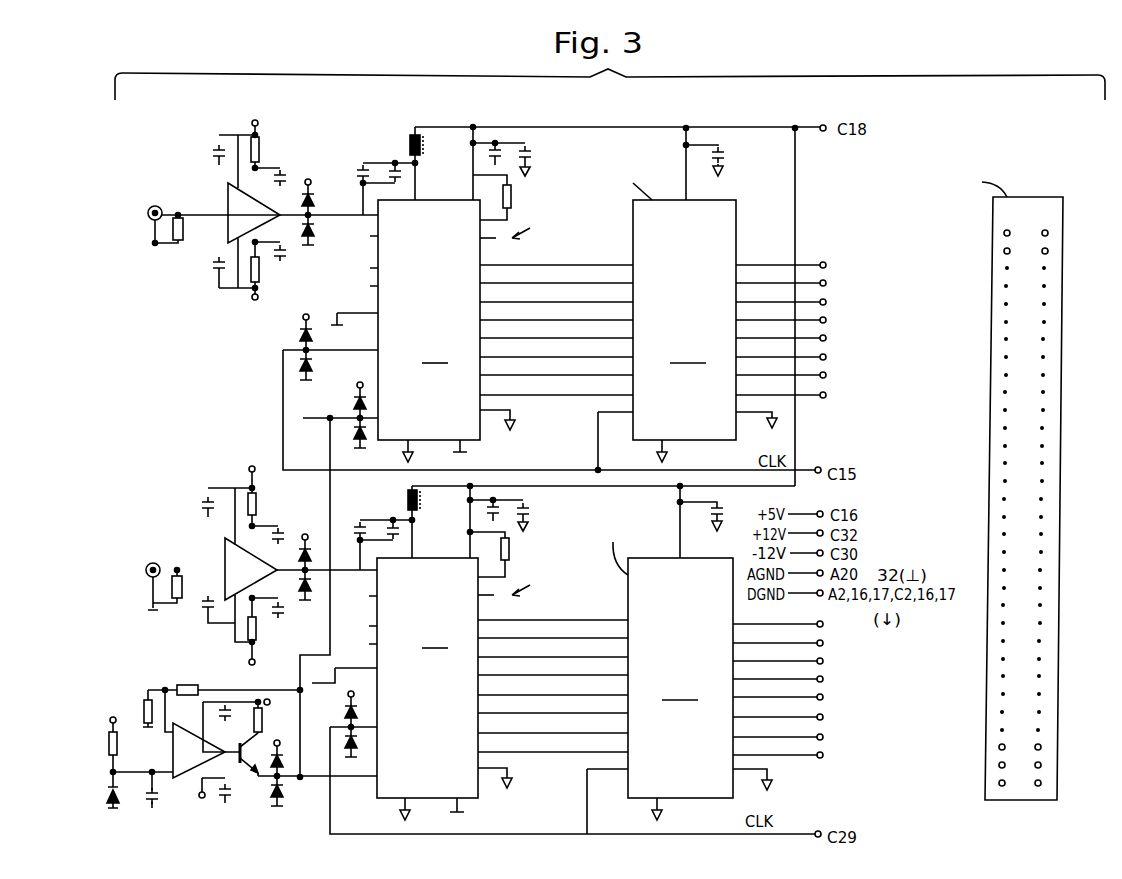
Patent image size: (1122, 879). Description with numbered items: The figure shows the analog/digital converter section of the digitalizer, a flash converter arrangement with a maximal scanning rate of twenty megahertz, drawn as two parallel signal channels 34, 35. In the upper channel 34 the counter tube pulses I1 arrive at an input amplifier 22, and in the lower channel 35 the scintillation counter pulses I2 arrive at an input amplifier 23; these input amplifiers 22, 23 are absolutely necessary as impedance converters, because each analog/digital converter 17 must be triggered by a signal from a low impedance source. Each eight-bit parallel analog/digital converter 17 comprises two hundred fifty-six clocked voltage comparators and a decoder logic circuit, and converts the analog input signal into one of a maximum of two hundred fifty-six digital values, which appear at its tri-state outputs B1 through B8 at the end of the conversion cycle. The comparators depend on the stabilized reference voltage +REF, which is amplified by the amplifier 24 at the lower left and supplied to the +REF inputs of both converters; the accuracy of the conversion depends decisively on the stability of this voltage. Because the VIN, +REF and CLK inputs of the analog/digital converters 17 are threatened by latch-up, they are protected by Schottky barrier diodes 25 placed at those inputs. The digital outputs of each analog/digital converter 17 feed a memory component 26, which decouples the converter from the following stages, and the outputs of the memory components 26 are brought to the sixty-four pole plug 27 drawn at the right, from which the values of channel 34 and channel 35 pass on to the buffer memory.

The analog/digital converter 17 is at (472, 480).
The input amplifier 22 is at (228, 232).
The input amplifier 23 is at (225, 550).
The amplifier 24 is at (188, 773).
The Schottky barrier diodes 25 is at (322, 200).
The memory component 26 is at (728, 476).
The 64-pole plug 27 is at (1028, 507).
The channel 34 is at (155, 207).
The channel 35 is at (150, 564).